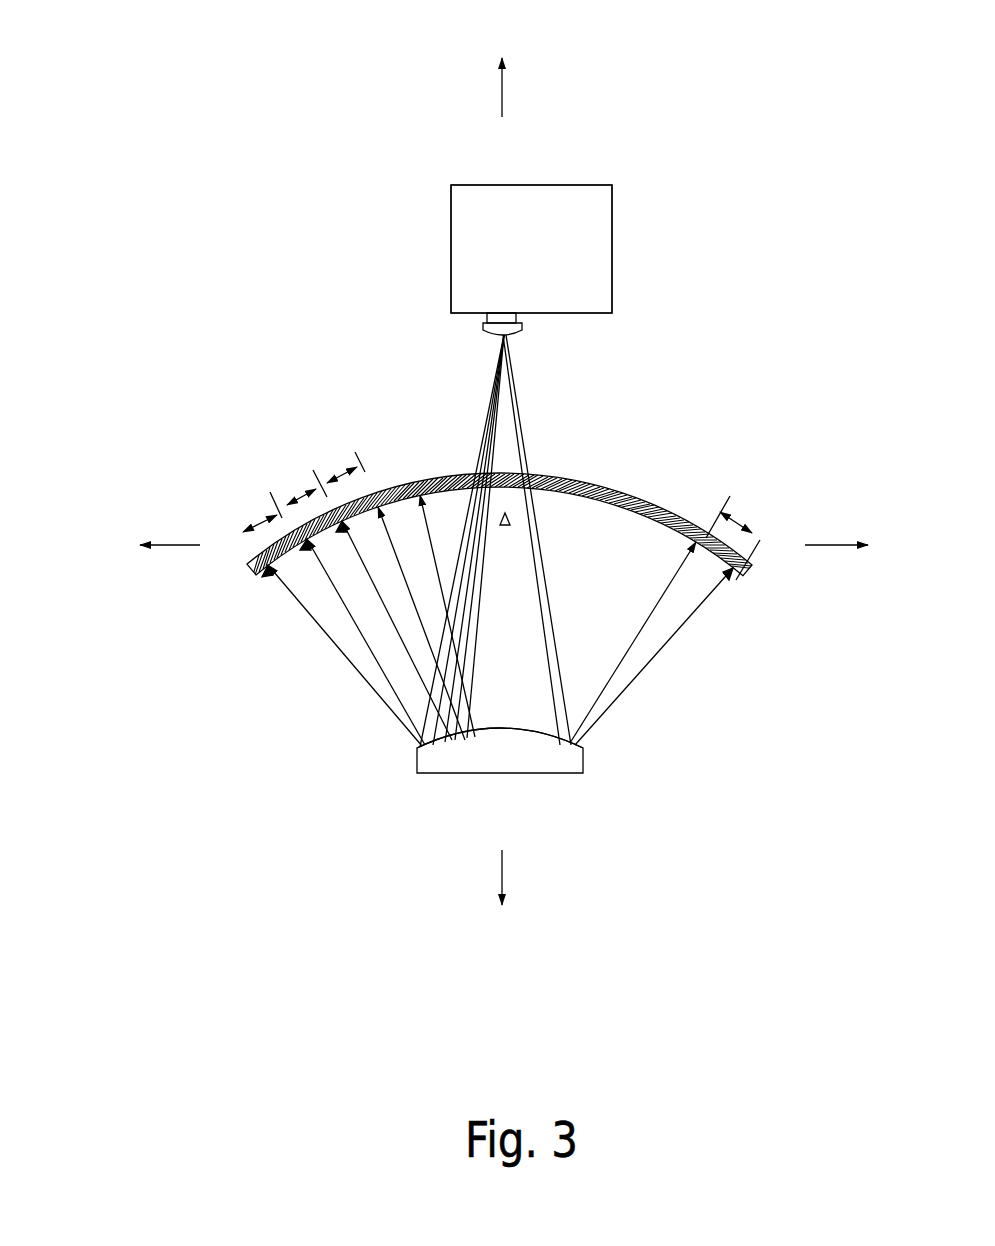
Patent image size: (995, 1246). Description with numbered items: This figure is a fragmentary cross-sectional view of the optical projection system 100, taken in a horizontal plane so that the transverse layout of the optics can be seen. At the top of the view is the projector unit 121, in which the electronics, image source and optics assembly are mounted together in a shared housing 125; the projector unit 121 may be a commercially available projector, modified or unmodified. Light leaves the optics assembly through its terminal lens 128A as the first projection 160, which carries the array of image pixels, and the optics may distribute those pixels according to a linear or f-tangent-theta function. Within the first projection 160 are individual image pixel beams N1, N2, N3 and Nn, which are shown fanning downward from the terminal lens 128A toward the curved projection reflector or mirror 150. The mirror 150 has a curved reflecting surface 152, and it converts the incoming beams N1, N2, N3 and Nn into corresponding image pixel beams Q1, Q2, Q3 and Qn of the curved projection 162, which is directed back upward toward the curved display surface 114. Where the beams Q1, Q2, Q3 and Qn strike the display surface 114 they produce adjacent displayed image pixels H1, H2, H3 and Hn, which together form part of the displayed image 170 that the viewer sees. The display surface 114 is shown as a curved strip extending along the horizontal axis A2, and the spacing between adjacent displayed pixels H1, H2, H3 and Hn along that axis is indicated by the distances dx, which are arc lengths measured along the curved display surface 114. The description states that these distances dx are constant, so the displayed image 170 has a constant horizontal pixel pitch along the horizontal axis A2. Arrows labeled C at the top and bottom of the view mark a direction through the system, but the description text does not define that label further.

The optical projection system 100 is at (697, 68).
The projector unit 121 is at (566, 165).
The shared housing 125 is at (587, 262).
The terminal lens 128A is at (517, 333).
The display surface 114 is at (637, 527).
The curved projection reflector or mirror 150 is at (552, 762).
The curved reflecting surface 152 is at (527, 735).
The first projection 160 is at (543, 432).
The curved projection 162 is at (636, 708).
The displayed image 170 is at (505, 527).
The image pixel beam N1 is at (478, 565).
The image pixel beam N2 is at (463, 552).
The image pixel beam N3 is at (452, 550).
The image pixel beam Nn is at (550, 600).
The displayed image pixel H1 is at (268, 578).
The displayed image pixel H2 is at (306, 555).
The displayed image pixel H3 is at (340, 540).
The displayed image pixel Hn is at (738, 576).
The image pixel beam Q1 is at (353, 667).
The image pixel beam Q2 is at (377, 657).
The image pixel beam Q3 is at (403, 650).
The image pixel beam Qn is at (636, 676).
The distance dx is at (243, 530).
The horizontal axis A2 is at (502, 546).
The axis C is at (503, 487).